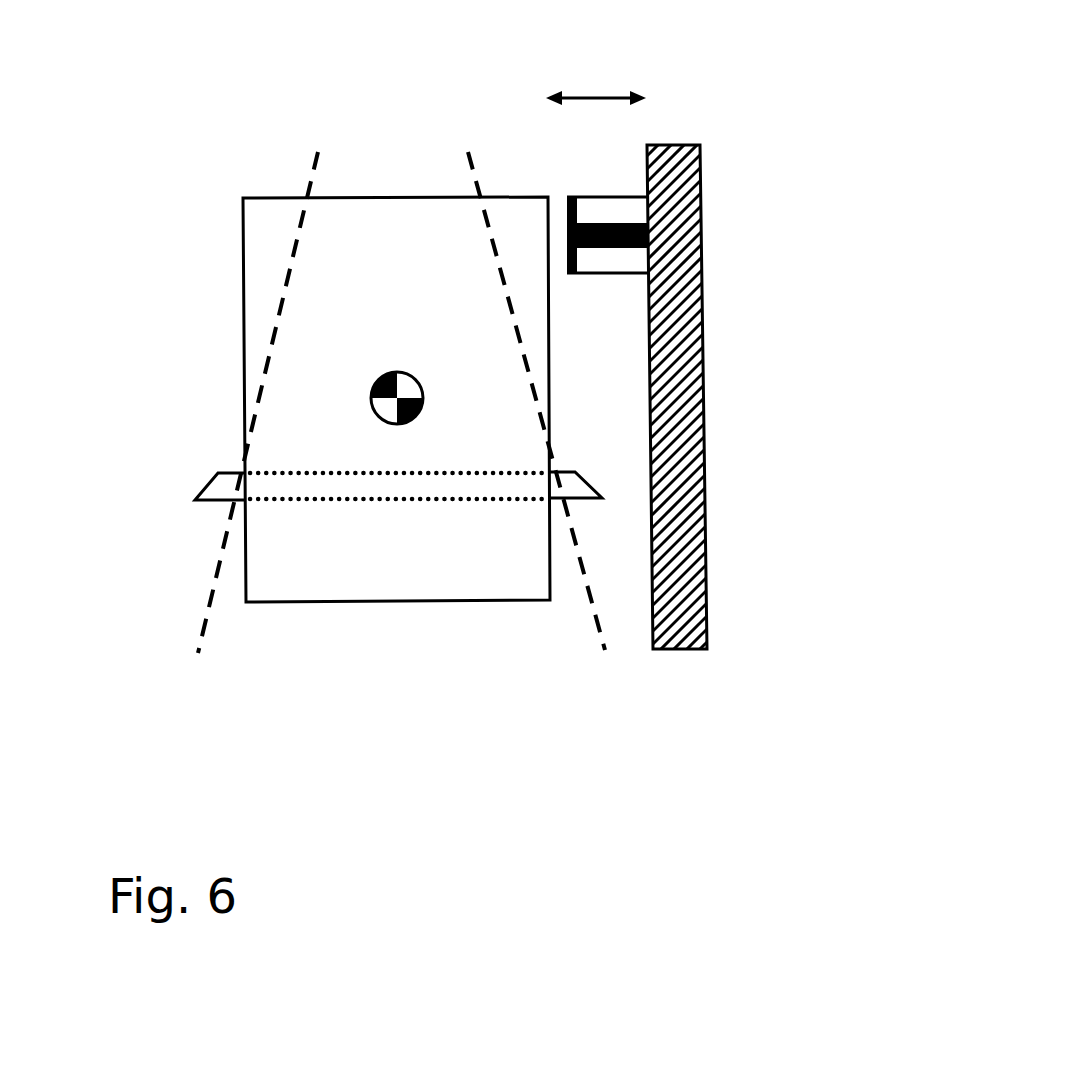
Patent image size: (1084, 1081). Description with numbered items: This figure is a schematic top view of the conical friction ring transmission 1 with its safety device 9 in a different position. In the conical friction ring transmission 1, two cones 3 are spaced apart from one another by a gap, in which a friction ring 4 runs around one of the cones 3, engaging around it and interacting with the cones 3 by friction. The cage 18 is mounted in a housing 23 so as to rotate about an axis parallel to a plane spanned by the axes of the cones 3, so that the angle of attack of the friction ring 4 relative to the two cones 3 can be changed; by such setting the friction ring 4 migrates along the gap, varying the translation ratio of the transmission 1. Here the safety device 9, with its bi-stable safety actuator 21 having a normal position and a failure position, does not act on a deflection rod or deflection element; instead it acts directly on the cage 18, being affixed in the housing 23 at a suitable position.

The conical friction ring transmission 1 is at (190, 167).
The cones 3 is at (205, 615).
The friction ring 4 is at (215, 483).
The safety device 9 is at (685, 87).
The cage 18 is at (244, 357).
The safety actuator 21 is at (638, 263).
The housing 23 is at (695, 400).